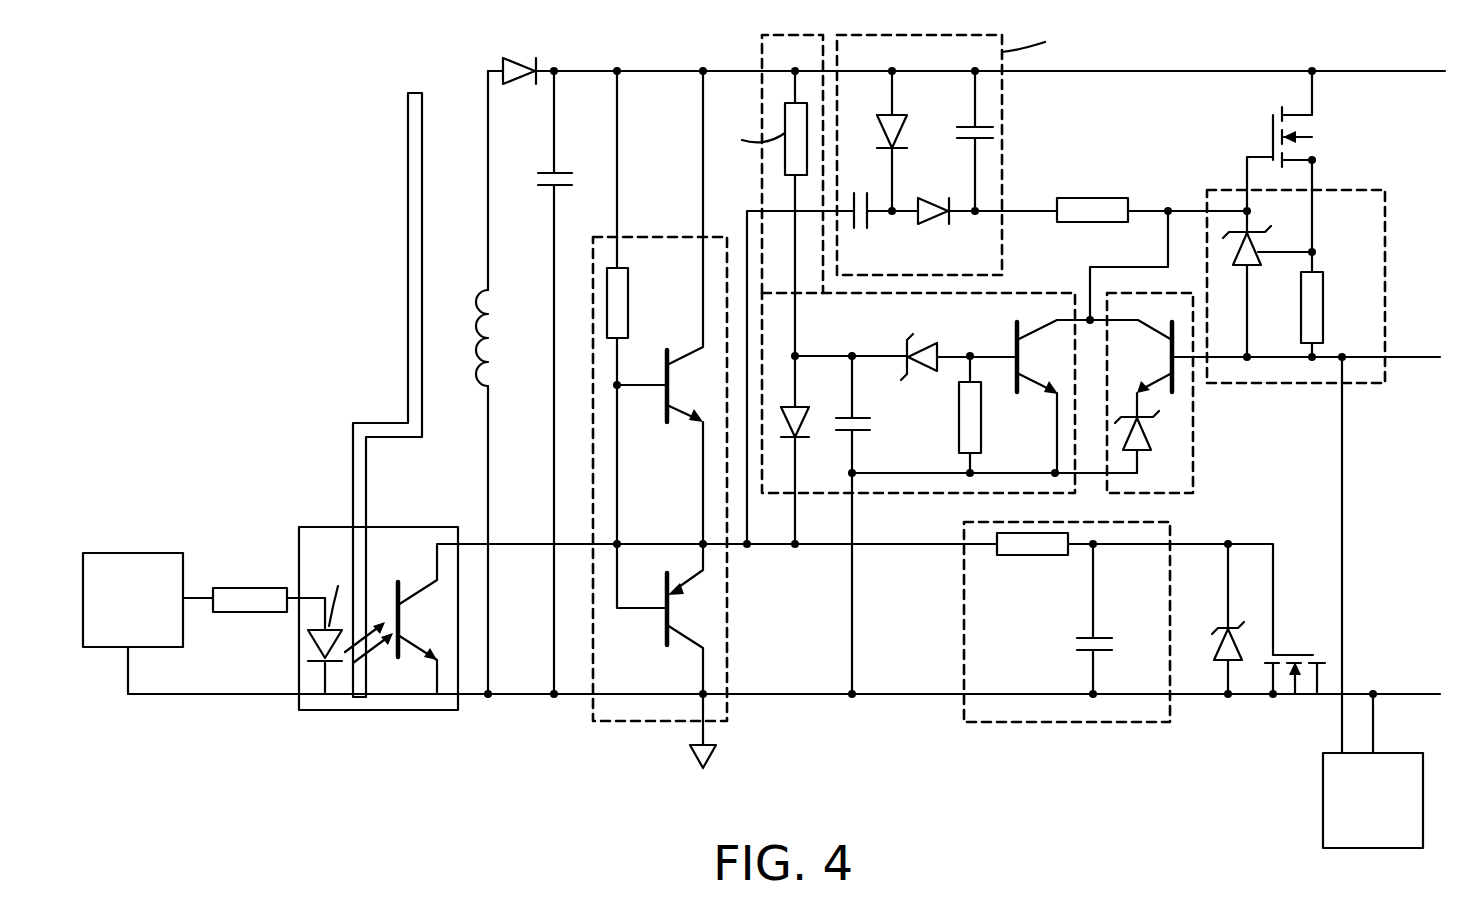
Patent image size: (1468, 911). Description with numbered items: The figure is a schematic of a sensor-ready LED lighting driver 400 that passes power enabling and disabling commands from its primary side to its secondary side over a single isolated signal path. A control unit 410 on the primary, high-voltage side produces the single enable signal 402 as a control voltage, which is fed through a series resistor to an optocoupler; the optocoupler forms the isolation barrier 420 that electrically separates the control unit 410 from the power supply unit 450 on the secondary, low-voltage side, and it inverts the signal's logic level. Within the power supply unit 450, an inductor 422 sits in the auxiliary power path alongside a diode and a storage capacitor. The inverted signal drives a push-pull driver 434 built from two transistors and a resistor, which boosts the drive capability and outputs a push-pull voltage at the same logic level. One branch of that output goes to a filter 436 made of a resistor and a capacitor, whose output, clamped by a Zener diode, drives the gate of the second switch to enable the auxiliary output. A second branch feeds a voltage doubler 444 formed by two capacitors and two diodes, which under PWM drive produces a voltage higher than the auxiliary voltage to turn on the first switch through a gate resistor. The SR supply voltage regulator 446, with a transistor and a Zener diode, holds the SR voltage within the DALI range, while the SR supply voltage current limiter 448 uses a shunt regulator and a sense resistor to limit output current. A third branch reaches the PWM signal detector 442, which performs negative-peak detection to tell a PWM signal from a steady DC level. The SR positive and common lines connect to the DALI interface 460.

The lighting driver 400 is at (208, 136).
The control unit 410 is at (128, 553).
The single enable signal 402 is at (421, 565).
The isolation barrier 420 is at (362, 710).
The inductor L1 422 is at (470, 314).
The push-pull driver 434 is at (660, 722).
The filter 436 is at (1065, 722).
The PWM signal detector 442 is at (750, 289).
The voltage doubler 444 is at (764, 42).
The SR supply voltage regulator 446 is at (1193, 478).
The SR supply voltage current limiter 448 is at (1370, 383).
The power supply unit 450 is at (468, 738).
The DALI interface 460 is at (1323, 795).